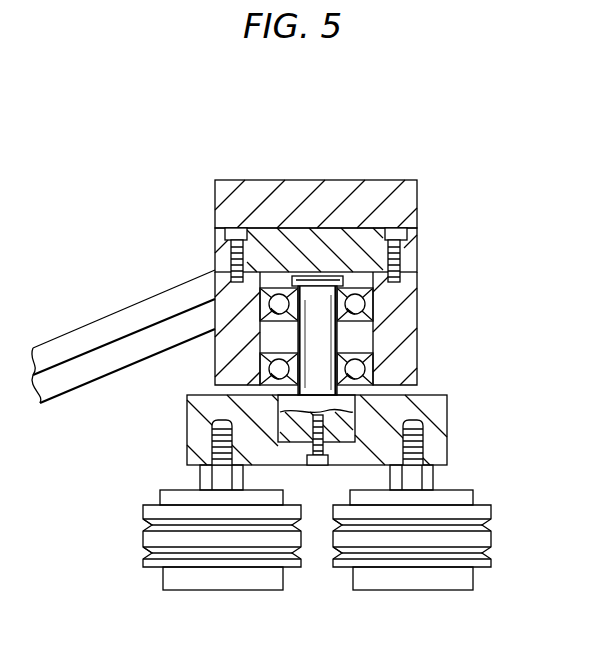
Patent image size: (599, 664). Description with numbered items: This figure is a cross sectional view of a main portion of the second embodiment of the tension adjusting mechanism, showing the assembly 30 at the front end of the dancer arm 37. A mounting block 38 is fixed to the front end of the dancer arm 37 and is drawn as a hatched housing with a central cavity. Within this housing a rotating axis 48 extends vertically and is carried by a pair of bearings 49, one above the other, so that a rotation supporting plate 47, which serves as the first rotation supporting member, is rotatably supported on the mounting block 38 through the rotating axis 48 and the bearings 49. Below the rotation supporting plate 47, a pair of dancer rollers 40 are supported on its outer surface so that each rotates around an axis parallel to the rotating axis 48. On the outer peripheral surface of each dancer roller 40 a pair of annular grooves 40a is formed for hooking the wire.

The bearing unit / mounting block 30 is at (256, 168).
The dancer arm 37 is at (88, 323).
The mounting block 38 is at (368, 311).
The rotation supporting plate 47 is at (448, 424).
The rotating axis 48 is at (305, 338).
The bearings 49 is at (368, 365).
The dancer rollers 40 is at (153, 568).
The annular grooves 40a is at (243, 522).